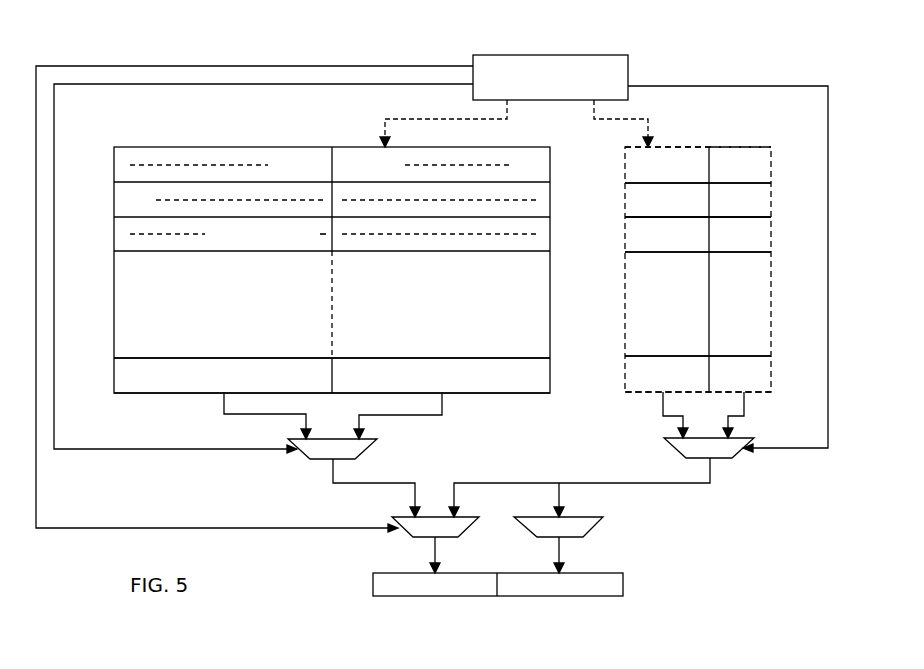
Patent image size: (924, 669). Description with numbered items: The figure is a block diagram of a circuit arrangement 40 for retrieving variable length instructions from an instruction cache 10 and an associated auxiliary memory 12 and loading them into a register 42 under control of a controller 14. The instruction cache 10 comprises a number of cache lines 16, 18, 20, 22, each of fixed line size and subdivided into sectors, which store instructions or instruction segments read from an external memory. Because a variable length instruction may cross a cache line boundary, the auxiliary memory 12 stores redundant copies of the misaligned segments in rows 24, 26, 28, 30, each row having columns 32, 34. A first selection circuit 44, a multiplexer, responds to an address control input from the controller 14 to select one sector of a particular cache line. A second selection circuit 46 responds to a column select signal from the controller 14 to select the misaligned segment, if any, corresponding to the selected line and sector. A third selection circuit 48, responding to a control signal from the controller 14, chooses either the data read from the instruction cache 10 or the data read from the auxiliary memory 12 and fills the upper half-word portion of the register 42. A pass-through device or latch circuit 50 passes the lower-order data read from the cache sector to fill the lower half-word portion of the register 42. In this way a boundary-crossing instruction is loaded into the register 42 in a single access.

The instruction cache 10 is at (112, 296).
The auxiliary memory 12 is at (773, 294).
The controller 14 is at (532, 100).
The cache line 16 is at (113, 165).
The cache line 18 is at (113, 199).
The cache line 20 is at (113, 233).
The cache line 22 is at (114, 374).
The row 24 is at (771, 165).
The row 26 is at (771, 203).
The row 28 is at (771, 236).
The row 30 is at (771, 373).
The column 32 is at (672, 146).
The column 34 is at (742, 146).
The memory access system 40 is at (846, 164).
The register 42 is at (623, 585).
The first selection circuit 44 is at (368, 450).
The second selection circuit 46 is at (723, 458).
The third selection circuit 48 is at (410, 537).
The pass-through device or latch circuit 50 is at (536, 537).